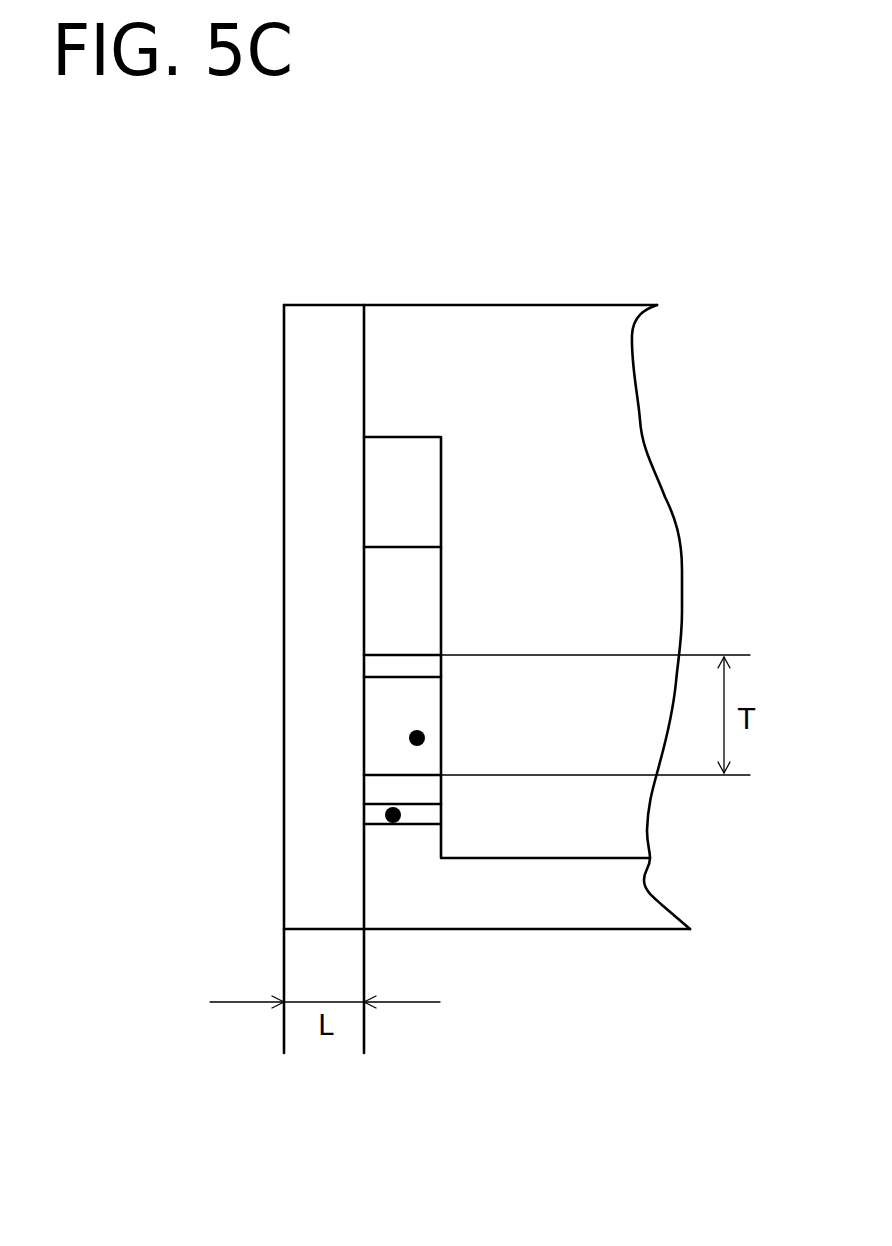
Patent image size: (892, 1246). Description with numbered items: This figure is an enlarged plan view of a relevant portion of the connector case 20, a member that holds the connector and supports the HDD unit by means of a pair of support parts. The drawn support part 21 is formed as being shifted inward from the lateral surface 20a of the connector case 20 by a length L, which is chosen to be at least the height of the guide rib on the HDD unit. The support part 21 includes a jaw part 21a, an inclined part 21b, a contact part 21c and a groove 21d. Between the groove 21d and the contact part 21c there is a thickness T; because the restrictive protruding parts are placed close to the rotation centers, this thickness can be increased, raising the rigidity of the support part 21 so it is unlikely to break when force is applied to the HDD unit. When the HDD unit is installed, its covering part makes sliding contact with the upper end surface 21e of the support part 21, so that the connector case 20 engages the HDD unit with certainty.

The connector case 20 is at (285, 269).
The lateral surface 20a is at (284, 530).
The support part 21 is at (450, 430).
The jaw part 21a is at (393, 825).
The inclined part 21b is at (420, 748).
The contact part 21c is at (410, 653).
The groove 21d is at (406, 777).
The upper end surface 21e is at (408, 437).